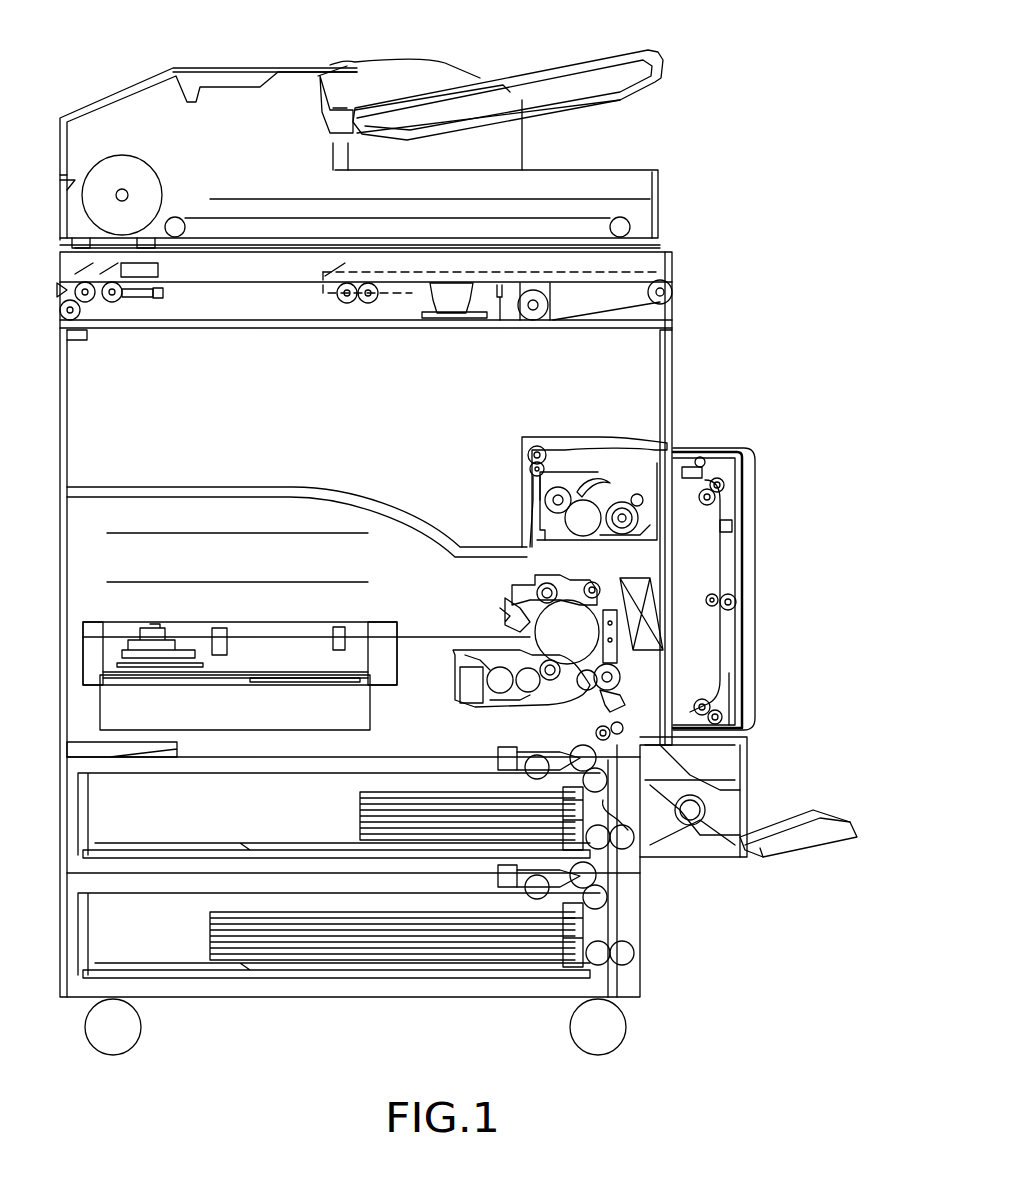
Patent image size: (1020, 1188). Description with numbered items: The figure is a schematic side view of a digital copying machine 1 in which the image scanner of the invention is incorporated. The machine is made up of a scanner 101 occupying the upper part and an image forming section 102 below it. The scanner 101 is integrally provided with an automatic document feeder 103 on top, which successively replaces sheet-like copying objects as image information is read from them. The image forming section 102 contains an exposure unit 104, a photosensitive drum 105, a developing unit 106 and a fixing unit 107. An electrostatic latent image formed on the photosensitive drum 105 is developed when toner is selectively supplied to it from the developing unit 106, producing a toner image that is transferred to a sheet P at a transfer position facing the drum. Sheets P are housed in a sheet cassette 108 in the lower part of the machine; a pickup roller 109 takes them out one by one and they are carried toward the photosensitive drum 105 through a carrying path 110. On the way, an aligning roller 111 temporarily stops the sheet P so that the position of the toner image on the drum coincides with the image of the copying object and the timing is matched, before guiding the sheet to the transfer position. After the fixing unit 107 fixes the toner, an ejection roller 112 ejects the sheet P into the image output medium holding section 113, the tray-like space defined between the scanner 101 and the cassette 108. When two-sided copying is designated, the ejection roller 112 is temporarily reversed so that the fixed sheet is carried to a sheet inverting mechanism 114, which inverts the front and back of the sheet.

The digital copying machine 1 is at (700, 77).
The scanner 101 is at (642, 380).
The image forming section 102 is at (198, 297).
The automatic document feeder 103 is at (165, 130).
The exposure unit 104 is at (170, 626).
The photosensitive drum 105 is at (578, 617).
The developing unit 106 is at (522, 686).
The fixing unit 107 is at (573, 482).
The sheet cassette 108 is at (295, 787).
The pickup roller 109 is at (537, 758).
The carrying path 110 is at (660, 733).
The aligning roller 111 is at (586, 690).
The ejection roller 112 is at (527, 455).
The image output medium holding section 113 is at (250, 487).
The sheet inverting mechanism 114 is at (756, 450).
The sheet P is at (425, 797).